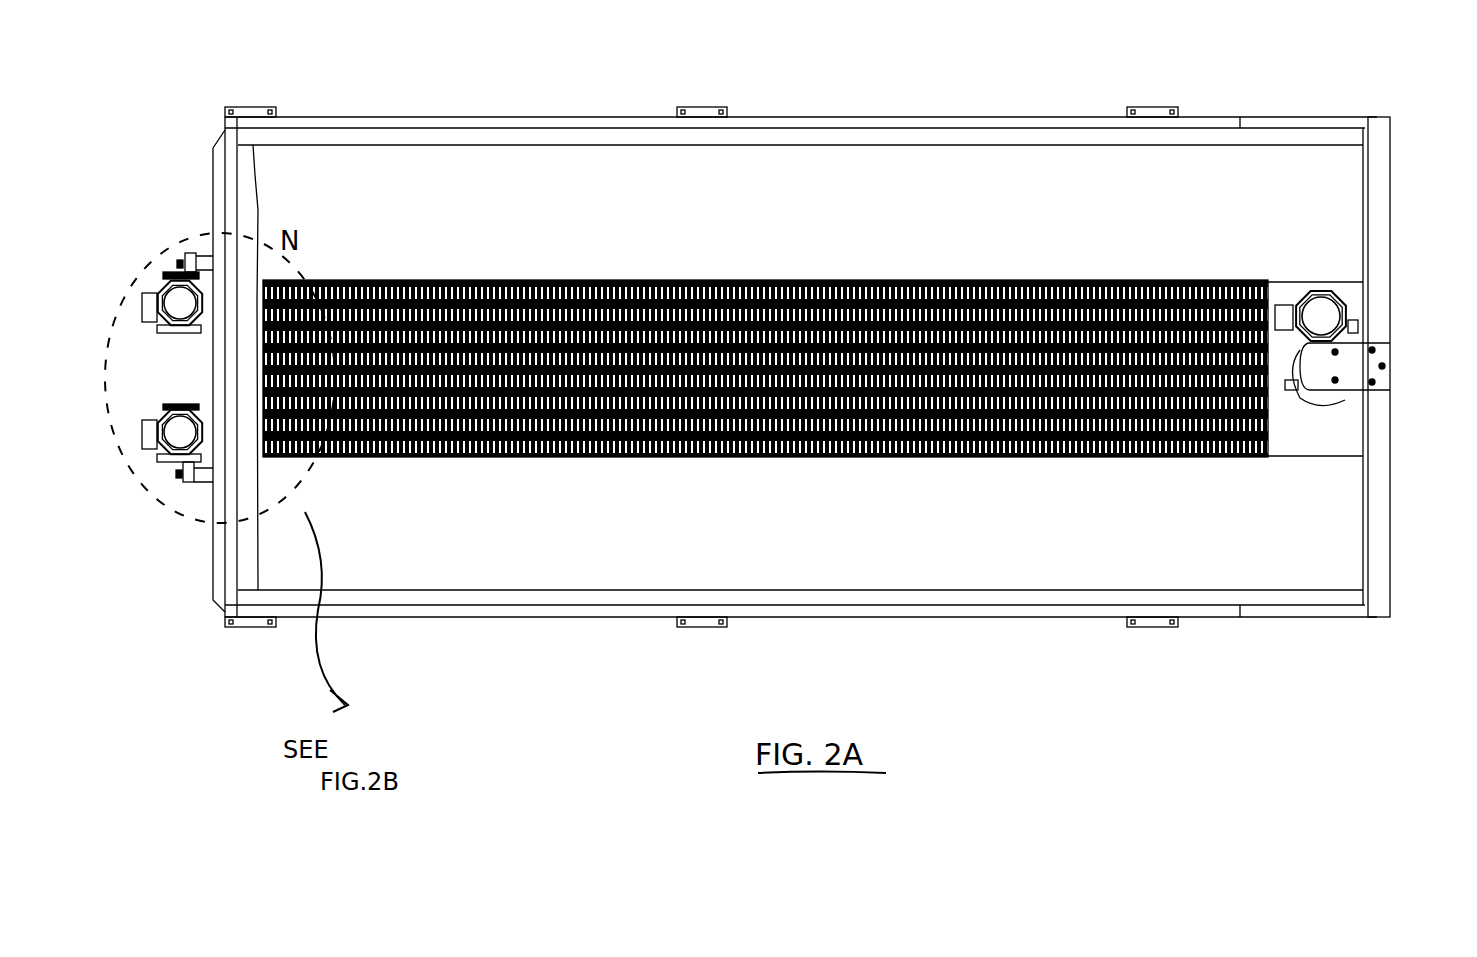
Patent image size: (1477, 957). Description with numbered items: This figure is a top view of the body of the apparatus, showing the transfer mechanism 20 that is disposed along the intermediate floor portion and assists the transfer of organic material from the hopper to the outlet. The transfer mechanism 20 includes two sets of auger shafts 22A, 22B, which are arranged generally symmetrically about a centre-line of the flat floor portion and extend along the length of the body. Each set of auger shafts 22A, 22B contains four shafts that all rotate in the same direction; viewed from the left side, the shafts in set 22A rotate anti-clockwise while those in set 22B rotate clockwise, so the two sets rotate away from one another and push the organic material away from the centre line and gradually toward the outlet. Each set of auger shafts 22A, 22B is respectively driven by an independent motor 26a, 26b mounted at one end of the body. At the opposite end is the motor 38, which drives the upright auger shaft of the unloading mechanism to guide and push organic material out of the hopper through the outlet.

The transfer mechanism 20 is at (953, 200).
The first set of auger shafts 22A is at (600, 262).
The second set of auger shafts 22B is at (598, 462).
The motor 26a is at (178, 435).
The motor 26b is at (178, 305).
The motor 38 is at (1322, 320).